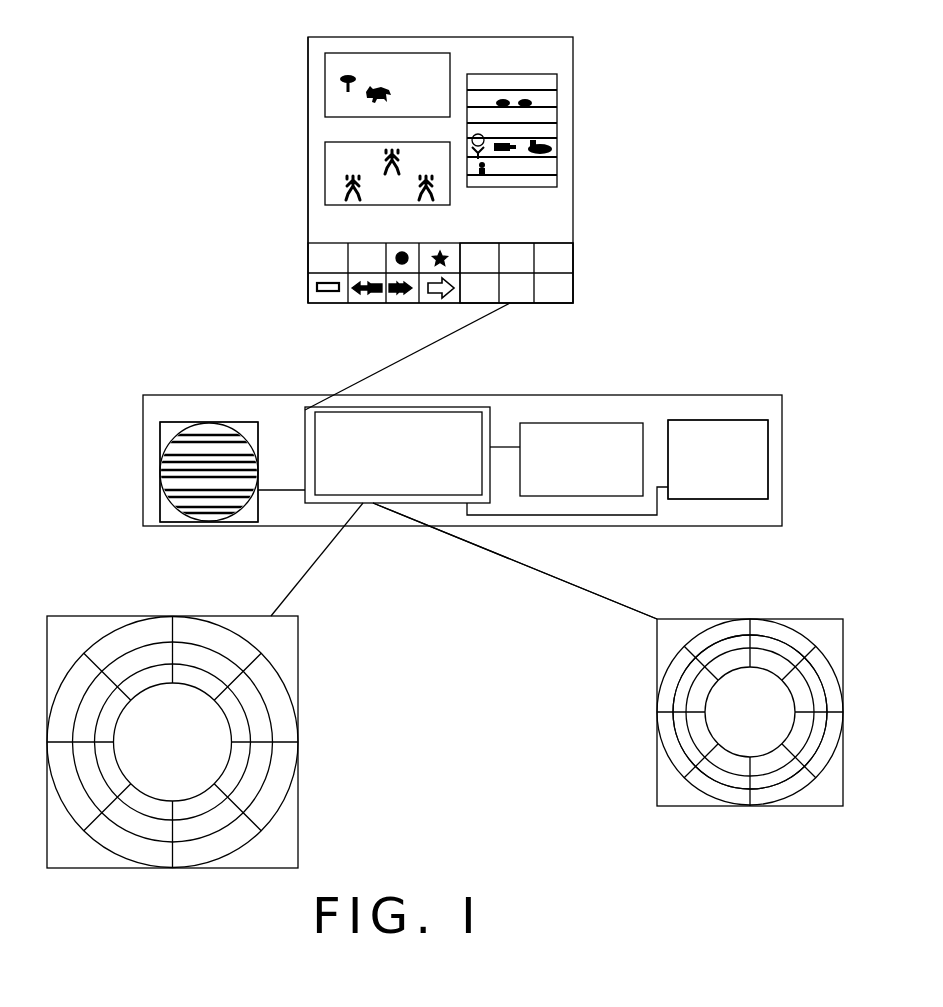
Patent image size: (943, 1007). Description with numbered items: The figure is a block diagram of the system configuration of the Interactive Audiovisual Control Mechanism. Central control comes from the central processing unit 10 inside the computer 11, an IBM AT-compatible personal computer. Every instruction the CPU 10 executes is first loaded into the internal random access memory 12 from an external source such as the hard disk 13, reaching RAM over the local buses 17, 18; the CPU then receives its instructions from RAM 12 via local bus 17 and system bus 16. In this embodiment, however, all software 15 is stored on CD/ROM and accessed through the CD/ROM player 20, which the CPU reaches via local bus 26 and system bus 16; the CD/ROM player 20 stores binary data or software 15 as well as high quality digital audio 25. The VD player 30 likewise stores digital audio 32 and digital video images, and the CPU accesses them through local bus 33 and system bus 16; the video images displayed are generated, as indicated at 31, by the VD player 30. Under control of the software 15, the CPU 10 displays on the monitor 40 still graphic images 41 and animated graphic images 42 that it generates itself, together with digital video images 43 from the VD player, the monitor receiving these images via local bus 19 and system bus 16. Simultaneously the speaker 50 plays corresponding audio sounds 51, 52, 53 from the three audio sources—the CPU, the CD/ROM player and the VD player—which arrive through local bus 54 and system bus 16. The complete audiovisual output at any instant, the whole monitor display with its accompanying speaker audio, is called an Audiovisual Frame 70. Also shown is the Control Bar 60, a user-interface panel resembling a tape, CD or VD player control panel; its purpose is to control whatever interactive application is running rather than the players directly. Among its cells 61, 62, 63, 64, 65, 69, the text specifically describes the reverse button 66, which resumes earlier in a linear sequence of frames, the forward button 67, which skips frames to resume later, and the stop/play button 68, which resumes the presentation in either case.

The central processing unit 10 is at (416, 437).
The computer 11 is at (527, 395).
The internal random access memory 12 is at (566, 423).
The hard disk 13 is at (694, 420).
The software 15 is at (768, 483).
The system bus 16 is at (441, 507).
The local bus 17 is at (502, 452).
The local bus 18 is at (529, 508).
The local bus 19 is at (379, 368).
The CD/ROM player 20 is at (729, 683).
The digital audio 25 is at (692, 673).
The local bus 26 is at (562, 572).
The VD player 30 is at (206, 714).
The digital video image generation 31 is at (247, 697).
The digital audio 32 is at (270, 786).
The local bus 33 is at (281, 592).
The monitor 40 is at (497, 37).
The still graphic images 41 is at (324, 84).
The animated graphic images 42 is at (324, 177).
The digital video images 43 is at (557, 136).
The speaker 50 is at (194, 473).
The audio sound 51 is at (177, 455).
The audio sound 52 is at (172, 477).
The audio sound 53 is at (178, 498).
The local bus 54 is at (266, 499).
The Control Bar 60 is at (418, 268).
The numeric menu item 61 is at (325, 245).
The alphabetic menu item 62 is at (366, 245).
The dot menu item 63 is at (403, 242).
The star menu item 64 is at (441, 243).
The rectangle menu item 65 is at (328, 306).
The reverse button 66 is at (367, 306).
The forward button 67 is at (402, 306).
The stop/play button 68 is at (441, 304).
The empty menu cells 69 is at (510, 243).
The Audiovisual Frame 70 is at (322, 212).